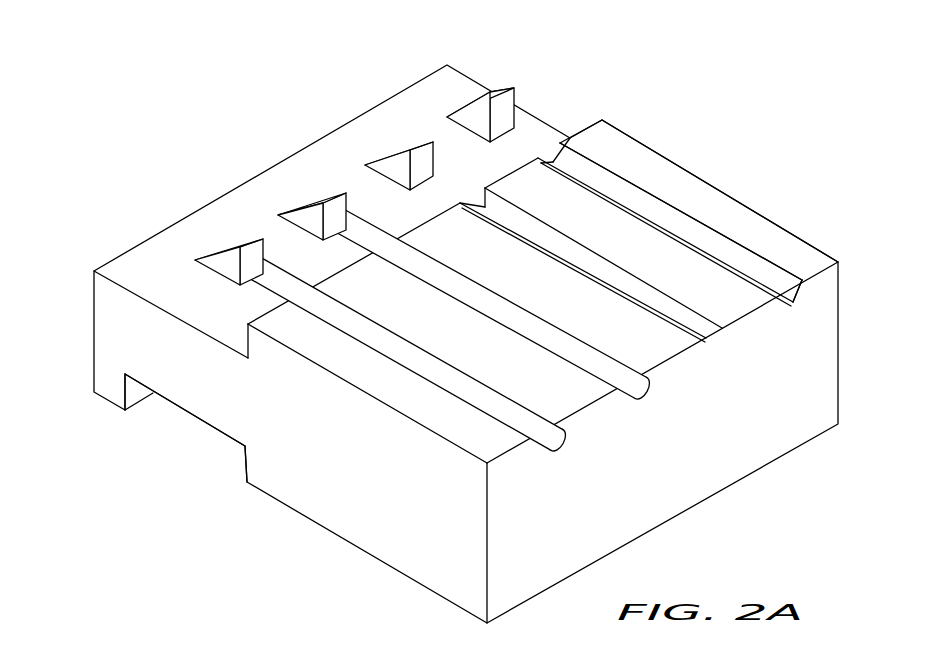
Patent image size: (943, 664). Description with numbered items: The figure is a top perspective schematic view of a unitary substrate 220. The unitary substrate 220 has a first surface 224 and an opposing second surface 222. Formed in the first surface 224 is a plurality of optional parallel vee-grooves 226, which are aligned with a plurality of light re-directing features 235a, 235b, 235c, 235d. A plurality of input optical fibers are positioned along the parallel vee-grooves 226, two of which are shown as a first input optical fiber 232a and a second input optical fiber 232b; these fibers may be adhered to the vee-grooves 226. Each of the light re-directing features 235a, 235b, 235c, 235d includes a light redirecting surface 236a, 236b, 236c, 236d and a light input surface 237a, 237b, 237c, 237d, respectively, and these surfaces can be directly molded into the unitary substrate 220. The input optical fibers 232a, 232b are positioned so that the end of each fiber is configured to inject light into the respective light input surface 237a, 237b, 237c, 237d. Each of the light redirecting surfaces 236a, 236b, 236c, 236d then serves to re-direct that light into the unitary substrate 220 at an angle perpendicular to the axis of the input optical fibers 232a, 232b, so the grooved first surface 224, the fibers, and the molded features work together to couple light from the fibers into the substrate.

The unitary substrate 220 is at (105, 298).
The second surface 222 is at (283, 500).
The first surface 224 is at (646, 166).
The parallel vee-grooves 226 is at (723, 230).
The first input optical fiber 232a is at (376, 334).
The second input optical fiber 232b is at (498, 313).
The light re-directing feature 235a is at (205, 277).
The light re-directing feature 235b is at (338, 172).
The light re-directing feature 235c is at (424, 118).
The light re-directing feature 235d is at (535, 88).
The light redirecting surface 236a is at (248, 240).
The light redirecting surface 236b is at (314, 197).
The light redirecting surface 236c is at (400, 146).
The light redirecting surface 236d is at (478, 103).
The light input surface 237a is at (265, 242).
The light input surface 237b is at (327, 233).
The light input surface 237c is at (418, 175).
The light input surface 237d is at (503, 125).